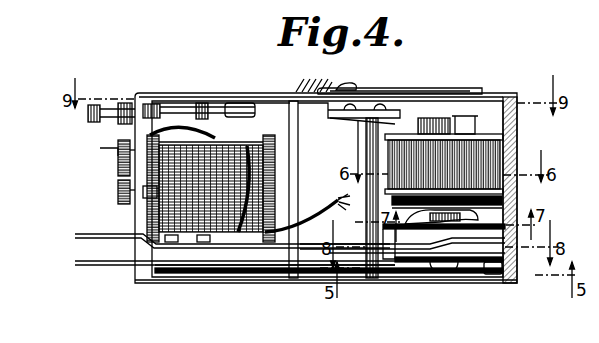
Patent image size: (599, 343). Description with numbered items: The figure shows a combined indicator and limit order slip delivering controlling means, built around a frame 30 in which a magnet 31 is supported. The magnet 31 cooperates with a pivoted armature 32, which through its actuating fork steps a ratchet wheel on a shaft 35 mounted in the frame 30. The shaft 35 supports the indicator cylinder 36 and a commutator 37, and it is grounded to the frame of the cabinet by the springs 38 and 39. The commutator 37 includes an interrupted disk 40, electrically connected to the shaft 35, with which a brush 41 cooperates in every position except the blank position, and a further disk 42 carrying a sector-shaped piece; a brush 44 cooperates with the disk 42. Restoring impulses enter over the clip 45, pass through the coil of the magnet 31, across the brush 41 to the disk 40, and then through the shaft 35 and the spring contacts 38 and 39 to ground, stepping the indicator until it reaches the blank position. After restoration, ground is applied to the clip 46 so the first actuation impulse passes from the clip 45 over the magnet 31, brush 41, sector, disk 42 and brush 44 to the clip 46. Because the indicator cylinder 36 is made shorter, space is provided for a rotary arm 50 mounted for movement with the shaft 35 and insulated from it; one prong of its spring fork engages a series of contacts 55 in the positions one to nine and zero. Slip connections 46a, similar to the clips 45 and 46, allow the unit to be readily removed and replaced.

The frame 30 is at (258, 96).
The magnet 31 is at (207, 152).
The pivoted armature 32 is at (296, 160).
The shaft 35 is at (447, 272).
The indicator cylinder 36 is at (490, 156).
The commutator 37 is at (430, 266).
The spring 38 is at (424, 88).
The spring 39 is at (344, 90).
The interrupted disk 40 is at (480, 273).
The brush 41 is at (392, 254).
The disk 42 is at (492, 274).
The brush 44 is at (412, 262).
The clip 45 is at (88, 234).
The clip 46 is at (90, 266).
The slip connection 46a is at (104, 149).
The rotary arm 50 is at (402, 245).
The contacts 55 is at (502, 206).